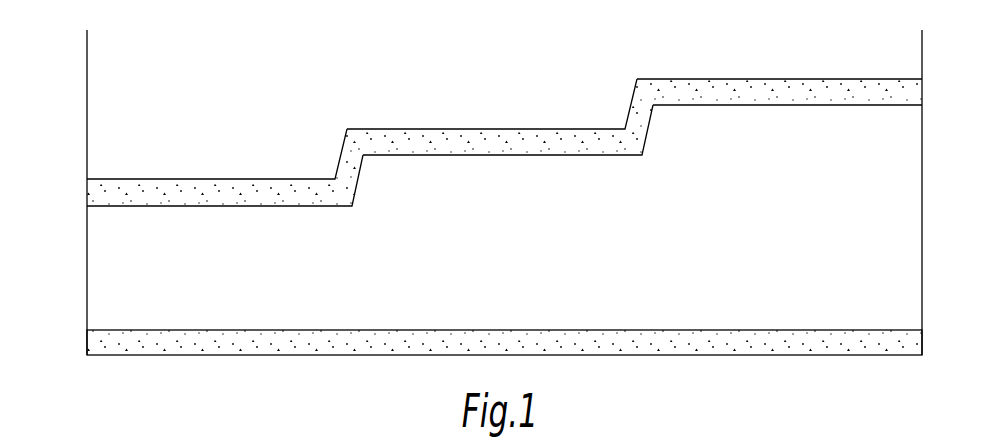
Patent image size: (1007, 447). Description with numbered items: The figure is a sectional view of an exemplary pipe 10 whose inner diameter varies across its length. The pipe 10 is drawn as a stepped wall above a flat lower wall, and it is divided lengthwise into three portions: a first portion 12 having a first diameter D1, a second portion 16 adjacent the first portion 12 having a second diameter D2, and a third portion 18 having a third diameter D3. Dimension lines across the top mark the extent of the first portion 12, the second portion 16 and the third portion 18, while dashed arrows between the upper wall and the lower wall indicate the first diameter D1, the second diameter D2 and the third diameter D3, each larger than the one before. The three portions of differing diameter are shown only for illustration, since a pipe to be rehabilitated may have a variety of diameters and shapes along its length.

The pipe 10 is at (926, 79).
The first portion 12 is at (335, 179).
The second portion 16 is at (625, 129).
The third portion 18 is at (637, 30).
The first diameter D1 is at (240, 216).
The second diameter D2 is at (504, 165).
The third diameter D3 is at (792, 115).